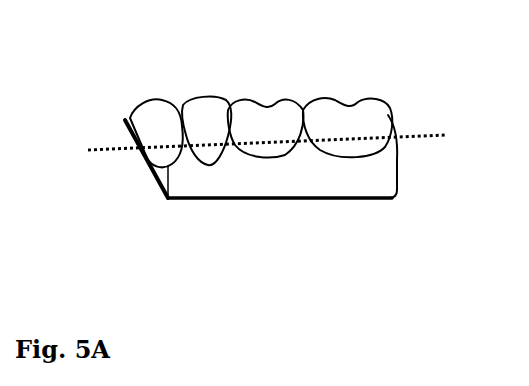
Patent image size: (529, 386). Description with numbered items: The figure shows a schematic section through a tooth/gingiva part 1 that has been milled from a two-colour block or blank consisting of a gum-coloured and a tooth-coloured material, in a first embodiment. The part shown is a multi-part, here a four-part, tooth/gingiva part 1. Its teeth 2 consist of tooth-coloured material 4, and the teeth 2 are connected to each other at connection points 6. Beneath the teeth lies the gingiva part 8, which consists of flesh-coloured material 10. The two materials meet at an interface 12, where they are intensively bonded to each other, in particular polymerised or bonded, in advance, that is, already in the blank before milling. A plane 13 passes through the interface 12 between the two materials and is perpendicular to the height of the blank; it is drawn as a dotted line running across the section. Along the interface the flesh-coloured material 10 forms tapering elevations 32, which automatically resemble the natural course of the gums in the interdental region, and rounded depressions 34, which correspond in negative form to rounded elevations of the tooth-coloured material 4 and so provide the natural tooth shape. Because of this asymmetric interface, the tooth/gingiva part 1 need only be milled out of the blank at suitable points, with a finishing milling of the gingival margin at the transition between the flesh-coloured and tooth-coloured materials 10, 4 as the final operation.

The tooth/gingiva part 1 is at (436, 105).
The teeth 2 is at (367, 120).
The tooth-coloured material 4 is at (247, 123).
The connection points 6 is at (302, 122).
The gingiva part 8 is at (385, 175).
The flesh-coloured material 10 is at (367, 177).
The interface 12 is at (375, 148).
The plane 13 is at (98, 153).
The tapering elevations 32 is at (182, 135).
The rounded depressions 34 is at (168, 198).